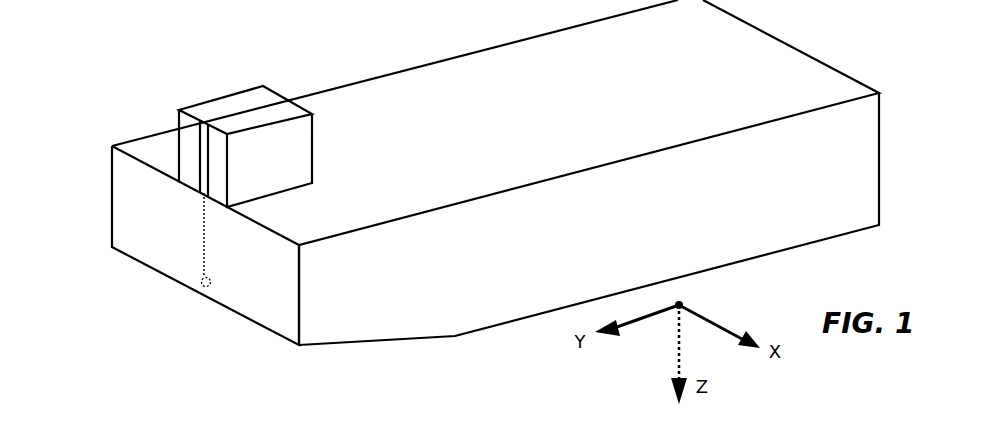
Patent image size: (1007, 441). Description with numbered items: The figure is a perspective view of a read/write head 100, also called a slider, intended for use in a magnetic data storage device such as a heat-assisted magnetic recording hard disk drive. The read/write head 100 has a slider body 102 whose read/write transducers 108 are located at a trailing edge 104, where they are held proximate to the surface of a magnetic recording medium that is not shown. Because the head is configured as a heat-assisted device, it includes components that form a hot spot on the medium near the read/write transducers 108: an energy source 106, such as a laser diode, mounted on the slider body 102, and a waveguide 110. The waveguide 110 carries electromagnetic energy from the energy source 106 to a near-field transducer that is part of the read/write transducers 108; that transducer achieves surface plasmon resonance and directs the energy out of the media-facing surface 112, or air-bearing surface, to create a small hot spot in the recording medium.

The read/write head 100 is at (845, 34).
The slider body 102 is at (438, 71).
The trailing edge 104 is at (112, 222).
The energy source 106 is at (205, 103).
The read/write transducers 108 is at (201, 318).
The waveguide 110 is at (205, 238).
The media-facing surface 112 is at (291, 346).